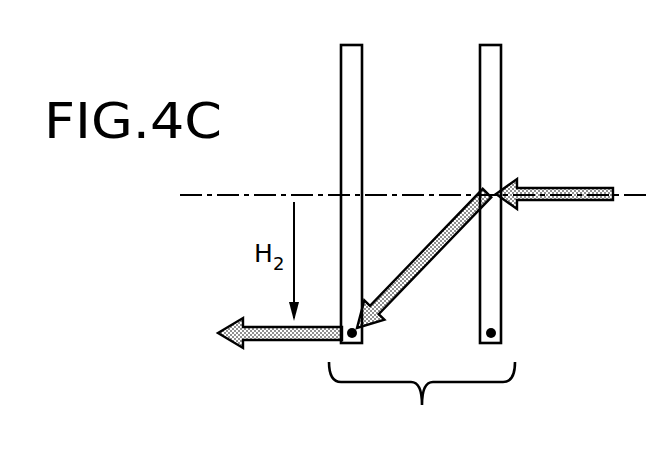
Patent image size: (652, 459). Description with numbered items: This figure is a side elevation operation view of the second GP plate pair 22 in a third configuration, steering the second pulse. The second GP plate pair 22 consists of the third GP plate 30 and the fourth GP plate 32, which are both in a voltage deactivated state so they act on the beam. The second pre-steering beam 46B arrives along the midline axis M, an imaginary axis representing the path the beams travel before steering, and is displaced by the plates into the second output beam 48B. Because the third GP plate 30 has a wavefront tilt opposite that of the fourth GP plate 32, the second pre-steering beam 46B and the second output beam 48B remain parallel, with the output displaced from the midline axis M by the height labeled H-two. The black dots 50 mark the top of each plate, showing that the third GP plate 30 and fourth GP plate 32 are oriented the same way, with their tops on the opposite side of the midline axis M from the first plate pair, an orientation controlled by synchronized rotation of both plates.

The midline axis M is at (194, 197).
The fourth GP plate 32 is at (340, 78).
The third GP plate 30 is at (501, 78).
The top dot 50 is at (357, 334).
The second pre-steering beam 46B is at (557, 184).
The second output beam 48B is at (295, 341).
The second GP plate pair 22 is at (422, 400).